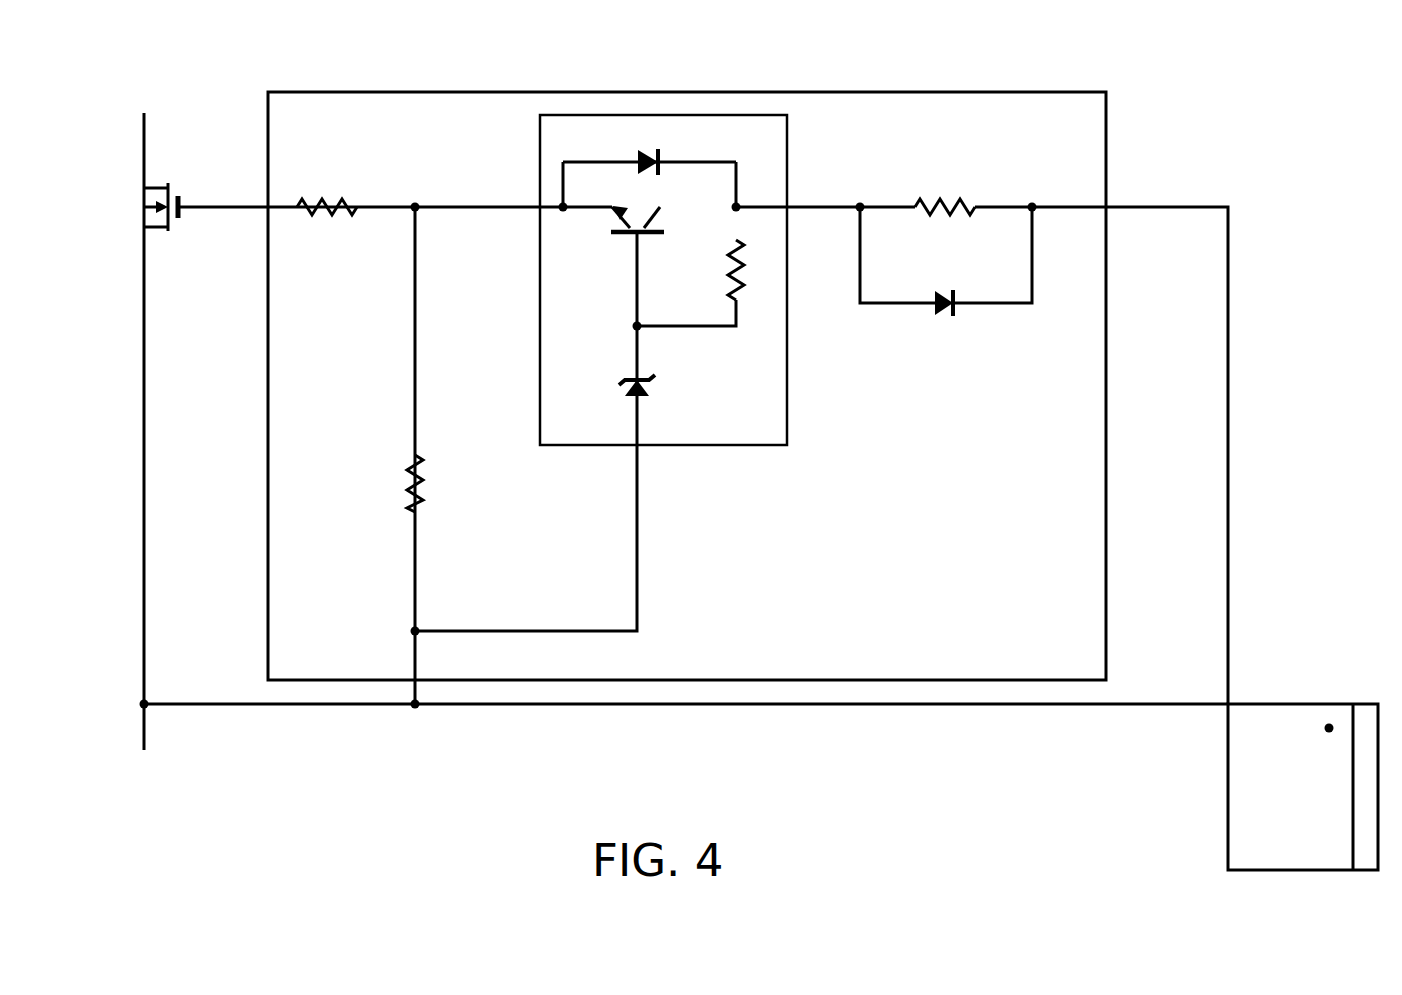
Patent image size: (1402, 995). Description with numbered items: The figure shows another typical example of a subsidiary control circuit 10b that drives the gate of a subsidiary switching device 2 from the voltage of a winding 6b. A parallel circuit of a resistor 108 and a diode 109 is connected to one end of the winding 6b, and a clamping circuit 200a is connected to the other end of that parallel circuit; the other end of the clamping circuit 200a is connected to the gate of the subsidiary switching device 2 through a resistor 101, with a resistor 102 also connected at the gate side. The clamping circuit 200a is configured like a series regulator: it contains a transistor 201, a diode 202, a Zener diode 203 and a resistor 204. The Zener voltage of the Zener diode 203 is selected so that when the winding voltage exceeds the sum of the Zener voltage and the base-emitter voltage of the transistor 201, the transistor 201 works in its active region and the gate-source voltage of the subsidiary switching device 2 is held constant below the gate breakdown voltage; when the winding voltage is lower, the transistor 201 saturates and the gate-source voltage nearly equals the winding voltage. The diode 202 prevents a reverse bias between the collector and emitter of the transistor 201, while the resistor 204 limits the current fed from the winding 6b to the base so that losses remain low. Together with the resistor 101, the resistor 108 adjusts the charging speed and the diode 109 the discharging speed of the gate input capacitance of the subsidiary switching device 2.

The subsidiary switching device 2 is at (122, 198).
The subsidiary control circuit 10b is at (506, 71).
The resistor 101 is at (340, 181).
The resistor 102 is at (396, 480).
The resistor 108 is at (962, 182).
The diode 109 is at (948, 330).
The clamping circuit 200a is at (790, 432).
The transistor 201 is at (614, 246).
The diode 202 is at (634, 147).
The Zener diode 203 is at (666, 386).
The resistor 204 is at (758, 277).
The winding 6b is at (1343, 814).